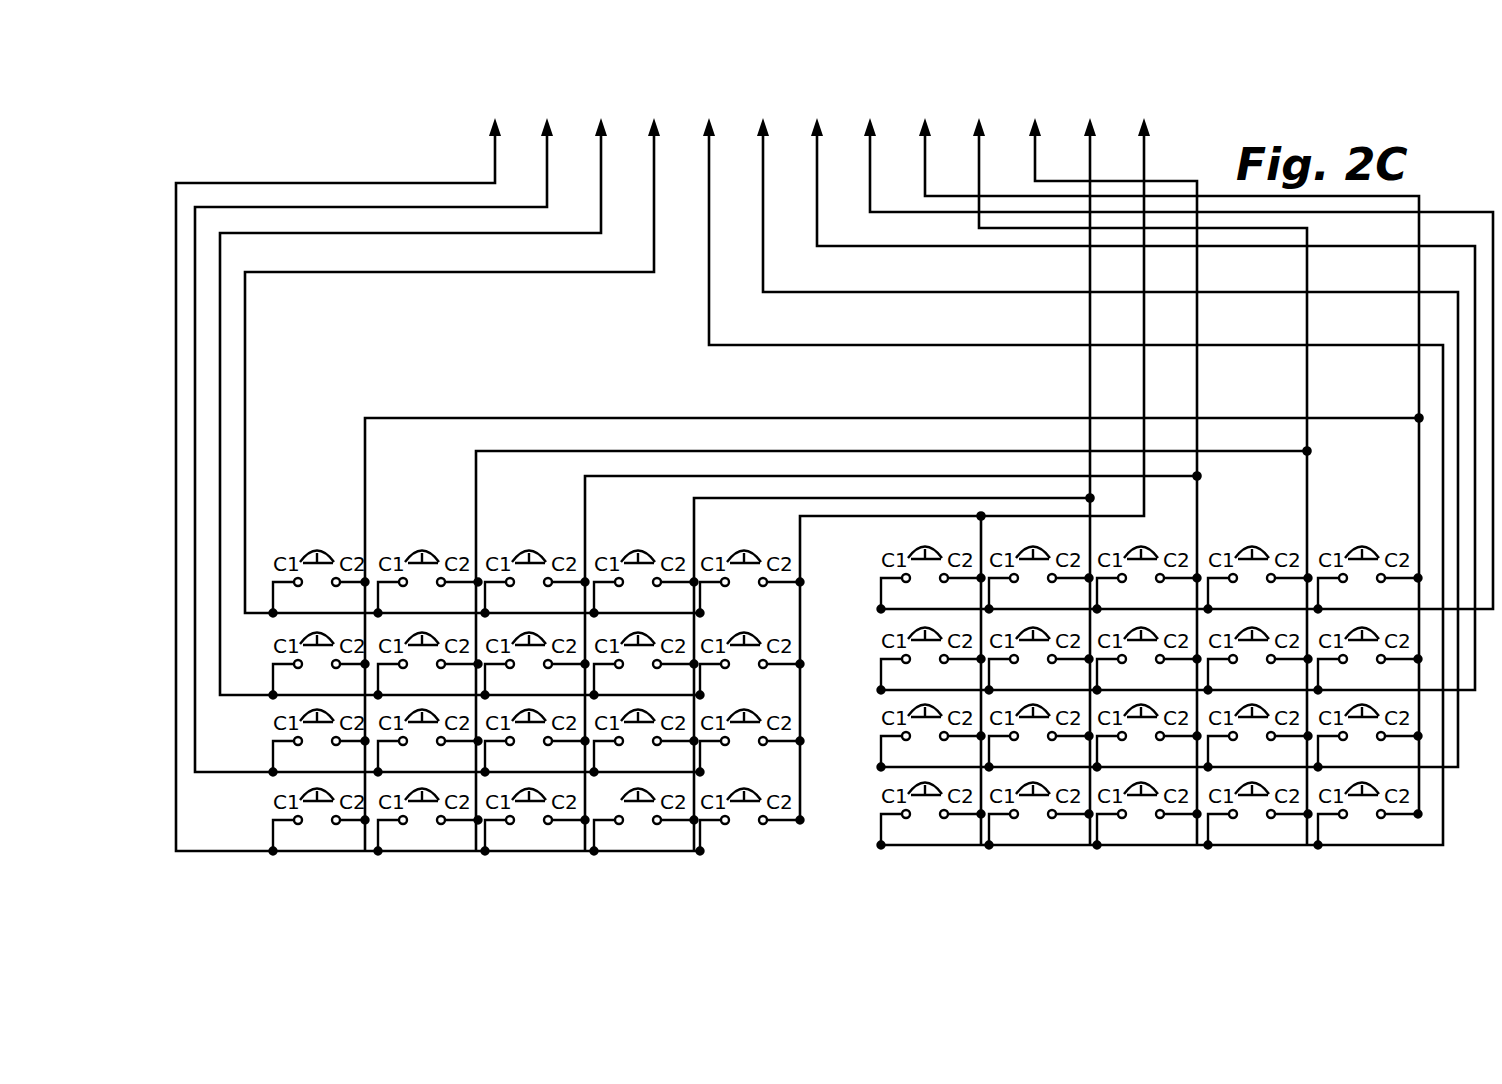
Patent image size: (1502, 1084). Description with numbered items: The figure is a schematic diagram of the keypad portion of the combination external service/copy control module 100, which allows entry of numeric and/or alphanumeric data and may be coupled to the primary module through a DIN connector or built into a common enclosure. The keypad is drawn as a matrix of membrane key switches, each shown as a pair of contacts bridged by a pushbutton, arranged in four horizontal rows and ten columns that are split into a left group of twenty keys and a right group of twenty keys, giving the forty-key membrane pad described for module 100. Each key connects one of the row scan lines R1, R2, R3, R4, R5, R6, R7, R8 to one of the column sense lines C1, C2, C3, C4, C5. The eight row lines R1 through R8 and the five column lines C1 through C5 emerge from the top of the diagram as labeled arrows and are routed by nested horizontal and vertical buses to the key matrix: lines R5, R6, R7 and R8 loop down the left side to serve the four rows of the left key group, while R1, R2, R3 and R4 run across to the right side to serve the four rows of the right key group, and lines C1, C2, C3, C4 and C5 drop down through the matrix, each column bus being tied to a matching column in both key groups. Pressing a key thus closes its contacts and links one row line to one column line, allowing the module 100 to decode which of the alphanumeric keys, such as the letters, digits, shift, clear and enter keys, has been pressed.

The external service/copy control module 100 is at (1238, 92).
The row line R1 is at (1178, 363).
The row line R2 is at (1143, 404).
The row line R3 is at (1107, 442).
The row line R4 is at (1073, 481).
The row line R5 is at (472, 365).
The row line R6 is at (460, 406).
The row line R7 is at (447, 445).
The row line R8 is at (438, 484).
The column line C1 is at (989, 481).
The column line C2 is at (909, 484).
The column line C3 is at (893, 484).
The column line C4 is at (893, 484).
The column line C5 is at (894, 484).